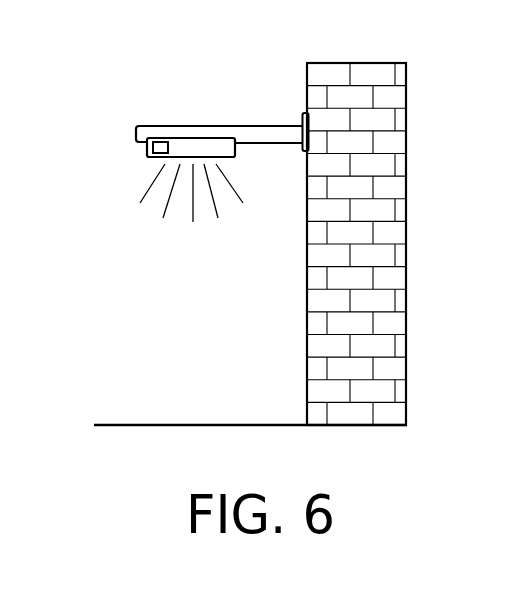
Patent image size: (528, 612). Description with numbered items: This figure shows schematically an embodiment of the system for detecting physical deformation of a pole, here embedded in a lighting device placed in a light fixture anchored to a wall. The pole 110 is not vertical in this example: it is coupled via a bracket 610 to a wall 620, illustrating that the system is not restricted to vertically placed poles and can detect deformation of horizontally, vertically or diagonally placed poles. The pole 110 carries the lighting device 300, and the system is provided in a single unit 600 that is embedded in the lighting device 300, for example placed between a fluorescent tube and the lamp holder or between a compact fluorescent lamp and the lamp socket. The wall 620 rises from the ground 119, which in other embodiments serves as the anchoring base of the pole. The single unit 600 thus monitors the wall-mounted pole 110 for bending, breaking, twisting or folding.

The pole 110 is at (161, 125).
The lighting device 300 is at (212, 141).
The single unit 600 is at (153, 149).
The bracket 610 is at (302, 113).
The wall 620 is at (399, 187).
The ground 119 is at (148, 425).